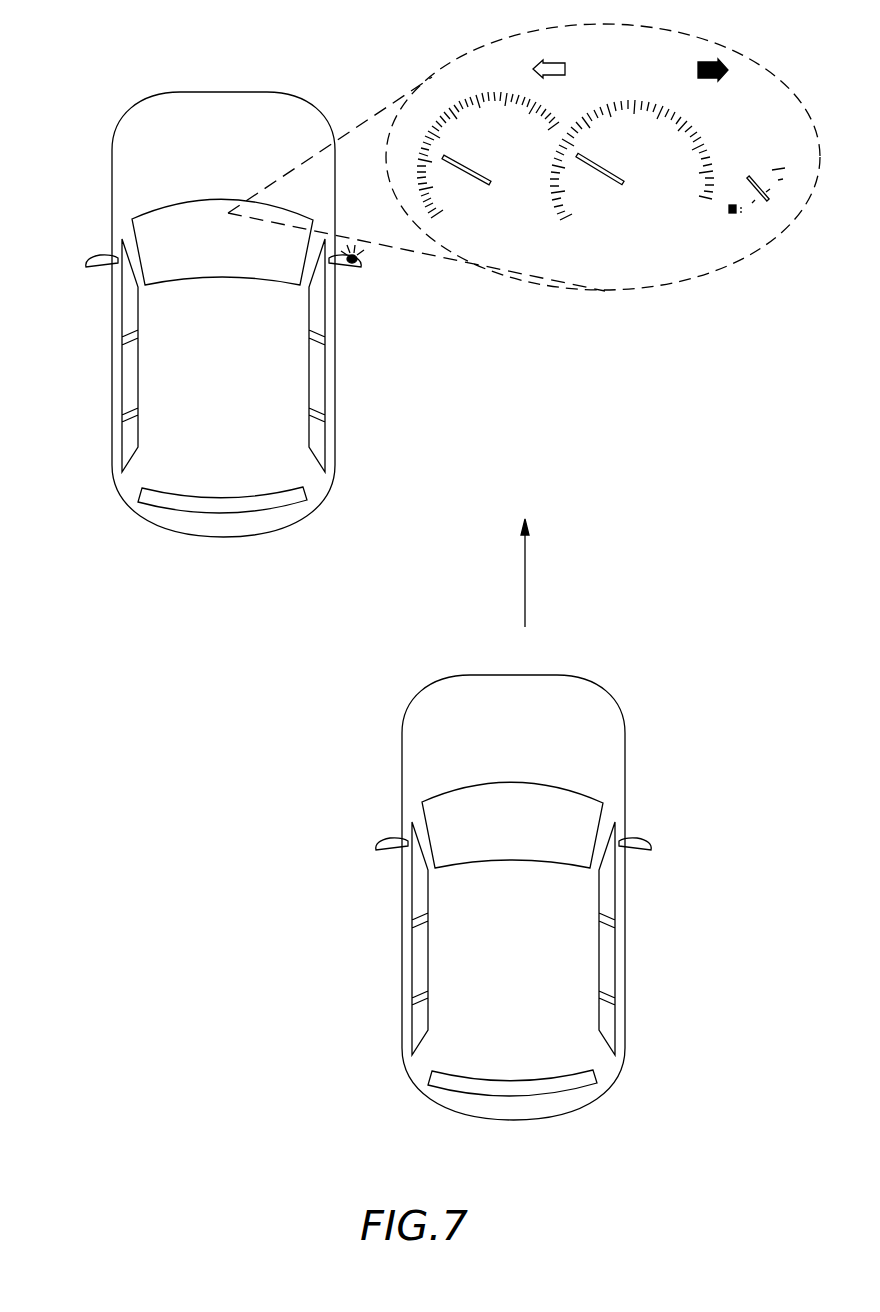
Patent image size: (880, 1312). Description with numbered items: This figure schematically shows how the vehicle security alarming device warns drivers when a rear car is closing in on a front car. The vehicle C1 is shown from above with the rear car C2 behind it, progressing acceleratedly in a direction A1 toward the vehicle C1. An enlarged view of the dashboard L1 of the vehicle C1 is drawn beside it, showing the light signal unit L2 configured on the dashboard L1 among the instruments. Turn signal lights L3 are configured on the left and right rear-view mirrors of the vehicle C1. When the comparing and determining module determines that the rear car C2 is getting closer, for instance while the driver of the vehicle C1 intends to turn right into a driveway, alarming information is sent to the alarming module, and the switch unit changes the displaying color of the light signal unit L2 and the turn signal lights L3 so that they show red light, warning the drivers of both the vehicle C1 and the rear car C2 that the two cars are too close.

The vehicle C1 is at (221, 110).
The rear car C2 is at (473, 695).
The dashboard L1 is at (477, 82).
The light signal unit L2 is at (713, 62).
The turn signal lights L3 is at (352, 268).
The direction A1 is at (527, 580).